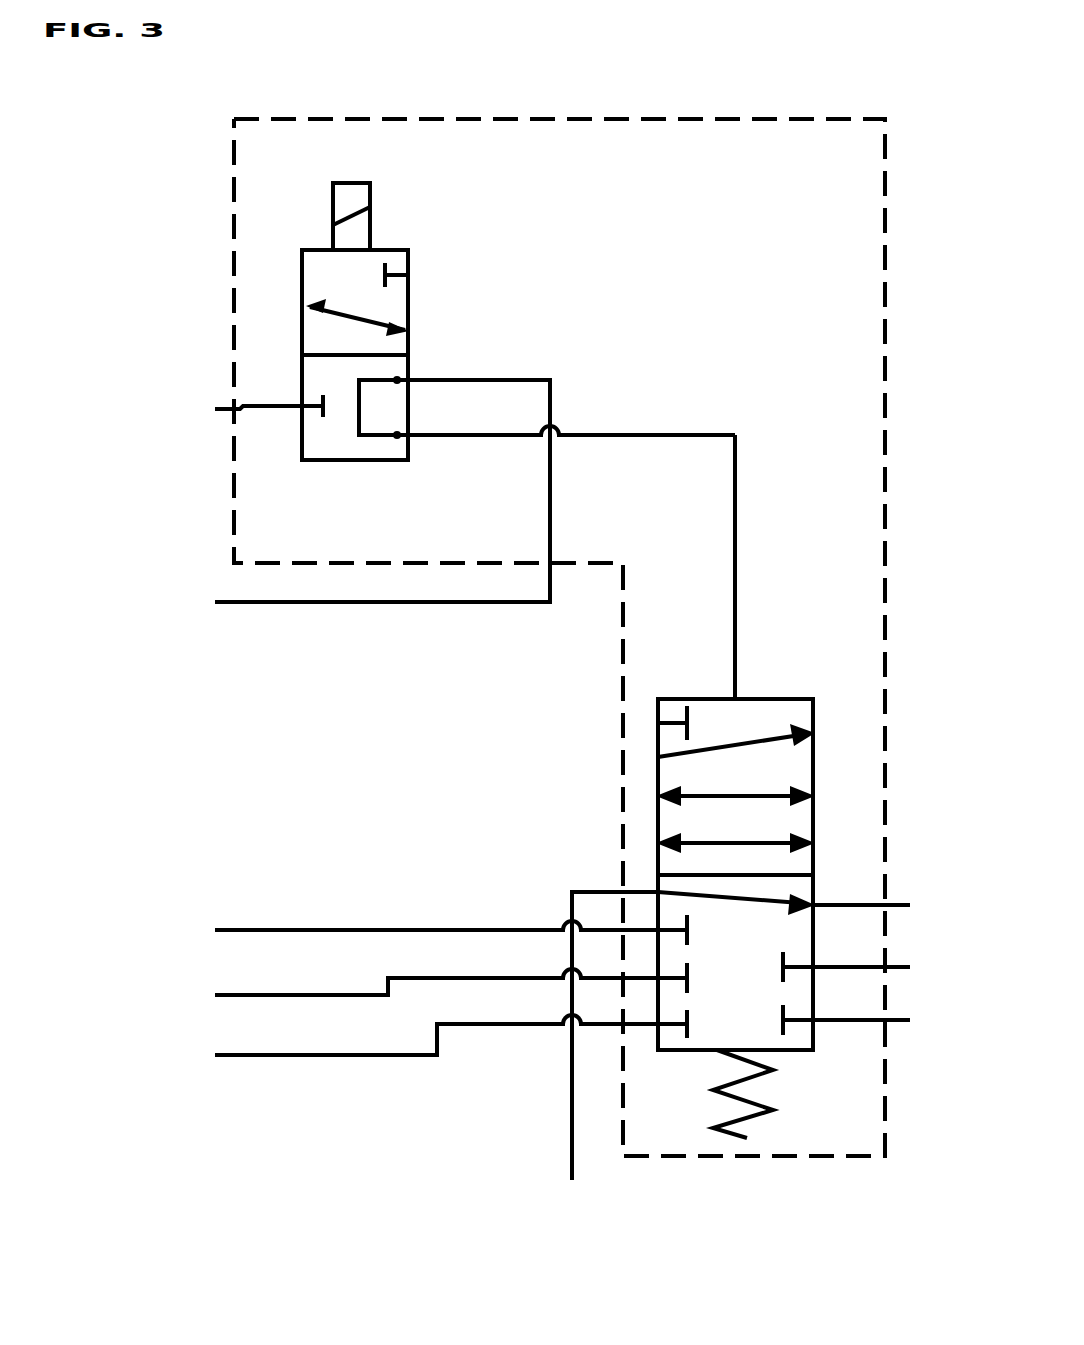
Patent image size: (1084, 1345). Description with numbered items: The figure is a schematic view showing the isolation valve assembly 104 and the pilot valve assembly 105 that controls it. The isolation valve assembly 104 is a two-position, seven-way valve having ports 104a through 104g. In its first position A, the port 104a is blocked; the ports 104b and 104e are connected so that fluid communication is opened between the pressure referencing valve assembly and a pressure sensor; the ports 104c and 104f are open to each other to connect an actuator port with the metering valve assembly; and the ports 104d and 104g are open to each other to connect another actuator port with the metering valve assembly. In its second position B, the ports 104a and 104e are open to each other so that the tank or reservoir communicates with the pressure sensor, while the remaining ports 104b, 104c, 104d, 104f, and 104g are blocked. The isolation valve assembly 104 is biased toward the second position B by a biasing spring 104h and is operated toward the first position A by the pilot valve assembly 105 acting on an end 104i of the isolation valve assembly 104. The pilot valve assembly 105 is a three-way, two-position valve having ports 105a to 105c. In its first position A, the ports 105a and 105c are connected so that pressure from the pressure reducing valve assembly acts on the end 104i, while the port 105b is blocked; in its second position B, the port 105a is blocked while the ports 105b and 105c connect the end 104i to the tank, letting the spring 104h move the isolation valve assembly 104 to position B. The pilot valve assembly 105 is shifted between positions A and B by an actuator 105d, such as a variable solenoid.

The isolation valve assembly 104 is at (827, 1156).
The port 104a is at (658, 723).
The port 104b is at (658, 757).
The port 104c is at (658, 796).
The port 104d is at (658, 843).
The port 104e is at (813, 732).
The port 104f is at (813, 797).
The port 104g is at (813, 843).
The biasing spring 104h is at (727, 1095).
The end of the isolation valve assembly 104i is at (737, 697).
The pilot valve assembly 105 is at (408, 250).
The port 105a is at (307, 307).
The port 105b is at (408, 275).
The port 105c is at (408, 330).
The actuator 105d is at (330, 202).